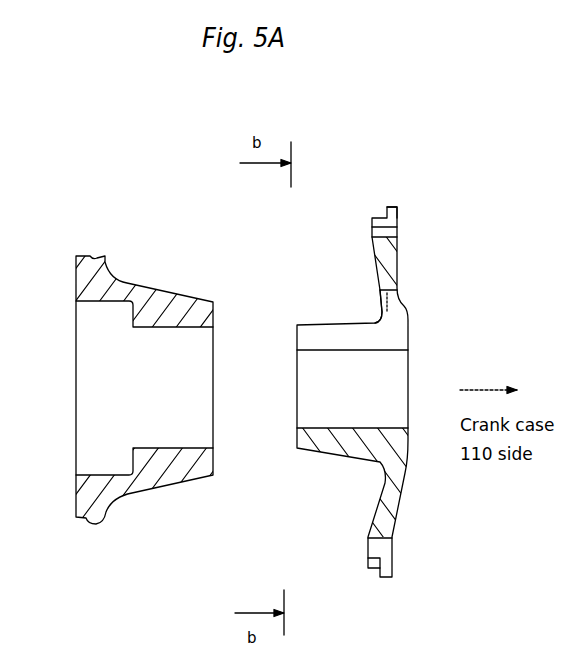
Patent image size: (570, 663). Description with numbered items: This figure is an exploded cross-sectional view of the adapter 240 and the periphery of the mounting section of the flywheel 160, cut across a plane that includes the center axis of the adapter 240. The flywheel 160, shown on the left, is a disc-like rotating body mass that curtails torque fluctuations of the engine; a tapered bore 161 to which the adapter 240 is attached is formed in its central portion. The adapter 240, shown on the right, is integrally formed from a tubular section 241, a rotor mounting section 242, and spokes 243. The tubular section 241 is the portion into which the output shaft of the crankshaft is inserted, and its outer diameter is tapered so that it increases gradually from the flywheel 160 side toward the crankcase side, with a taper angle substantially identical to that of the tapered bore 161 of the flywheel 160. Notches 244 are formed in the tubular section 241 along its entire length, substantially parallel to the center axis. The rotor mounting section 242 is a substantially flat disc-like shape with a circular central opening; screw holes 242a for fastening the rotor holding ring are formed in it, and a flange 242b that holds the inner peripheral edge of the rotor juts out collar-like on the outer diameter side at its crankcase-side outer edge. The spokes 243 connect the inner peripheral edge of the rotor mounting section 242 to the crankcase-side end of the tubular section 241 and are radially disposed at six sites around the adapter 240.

The flywheel 160 is at (138, 250).
The tapered bore 161 is at (170, 327).
The adapter 240 is at (418, 498).
The tubular section 241 is at (400, 360).
The rotor mounting section 242 is at (372, 220).
The screw holes 242a is at (376, 237).
The flange 242b is at (394, 210).
The spokes 243 is at (400, 280).
The notches 244 is at (388, 327).